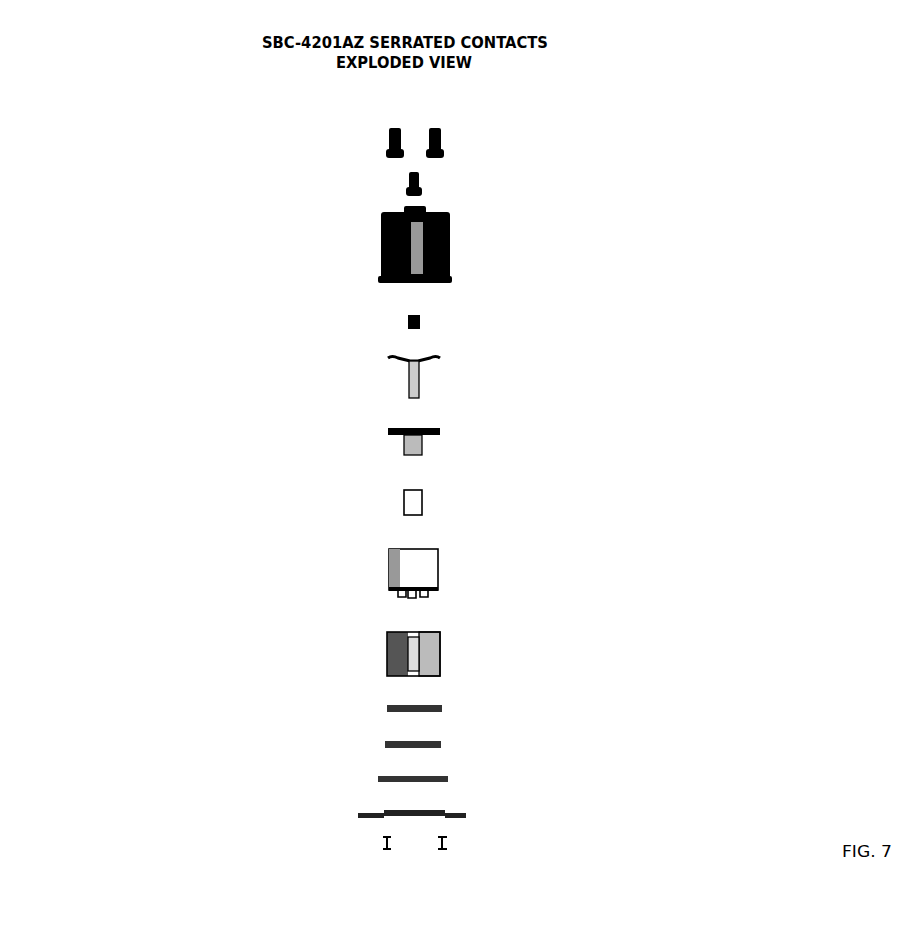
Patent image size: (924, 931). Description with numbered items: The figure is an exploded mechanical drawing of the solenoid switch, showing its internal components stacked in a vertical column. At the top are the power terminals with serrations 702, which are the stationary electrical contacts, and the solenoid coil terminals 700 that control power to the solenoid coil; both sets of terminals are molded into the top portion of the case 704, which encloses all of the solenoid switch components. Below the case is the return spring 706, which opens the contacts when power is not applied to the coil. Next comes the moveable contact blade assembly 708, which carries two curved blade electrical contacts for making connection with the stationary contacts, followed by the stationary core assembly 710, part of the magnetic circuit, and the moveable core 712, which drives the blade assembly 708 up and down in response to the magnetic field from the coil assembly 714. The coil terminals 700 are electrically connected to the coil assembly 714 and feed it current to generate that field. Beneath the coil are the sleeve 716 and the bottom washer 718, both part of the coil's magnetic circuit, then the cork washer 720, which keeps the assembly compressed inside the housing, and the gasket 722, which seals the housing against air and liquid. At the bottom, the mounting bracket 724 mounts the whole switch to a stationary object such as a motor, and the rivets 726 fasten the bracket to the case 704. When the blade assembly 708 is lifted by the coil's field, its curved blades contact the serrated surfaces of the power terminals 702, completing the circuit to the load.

The solenoid coil terminals 700 is at (406, 179).
The power terminals with serrations 702 is at (445, 137).
The case 704 is at (379, 240).
The return spring 706 is at (423, 320).
The moveable contact blade assembly 708 is at (406, 383).
The stationary core assembly 710 is at (444, 430).
The moveable core 712 is at (404, 500).
The coil assembly 714 is at (441, 568).
The sleeve 716 is at (387, 650).
The bottom washer 718 is at (444, 708).
The cork washer 720 is at (384, 744).
The gasket 722 is at (451, 779).
The mounting bracket 724 is at (359, 814).
The rivets 726 is at (450, 845).